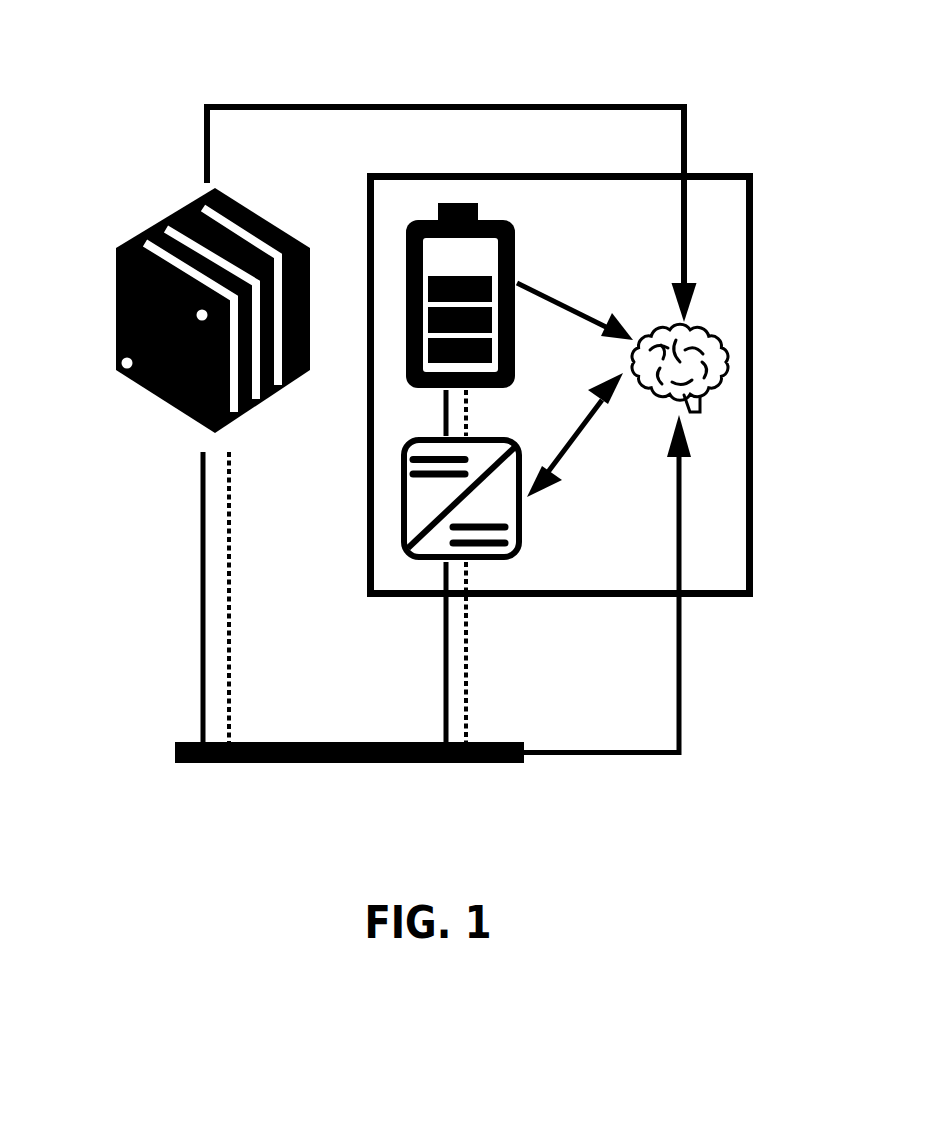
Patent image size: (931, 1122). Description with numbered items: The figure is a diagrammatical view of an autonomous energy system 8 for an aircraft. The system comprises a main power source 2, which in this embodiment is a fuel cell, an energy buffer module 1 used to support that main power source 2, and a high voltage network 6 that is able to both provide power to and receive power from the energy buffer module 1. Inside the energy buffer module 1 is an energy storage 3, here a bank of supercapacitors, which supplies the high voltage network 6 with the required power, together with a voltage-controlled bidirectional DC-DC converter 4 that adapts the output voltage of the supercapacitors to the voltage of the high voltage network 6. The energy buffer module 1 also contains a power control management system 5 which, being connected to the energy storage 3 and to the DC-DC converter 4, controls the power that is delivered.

The energy buffer module 1 is at (721, 615).
The main power source 2 is at (150, 245).
The energy storage 3 is at (500, 222).
The voltage-controlled bidirectional DC-DC converter 4 is at (401, 508).
The power control management system 5 is at (718, 338).
The high voltage network 6 is at (383, 763).
The autonomous energy system 8 is at (170, 90).